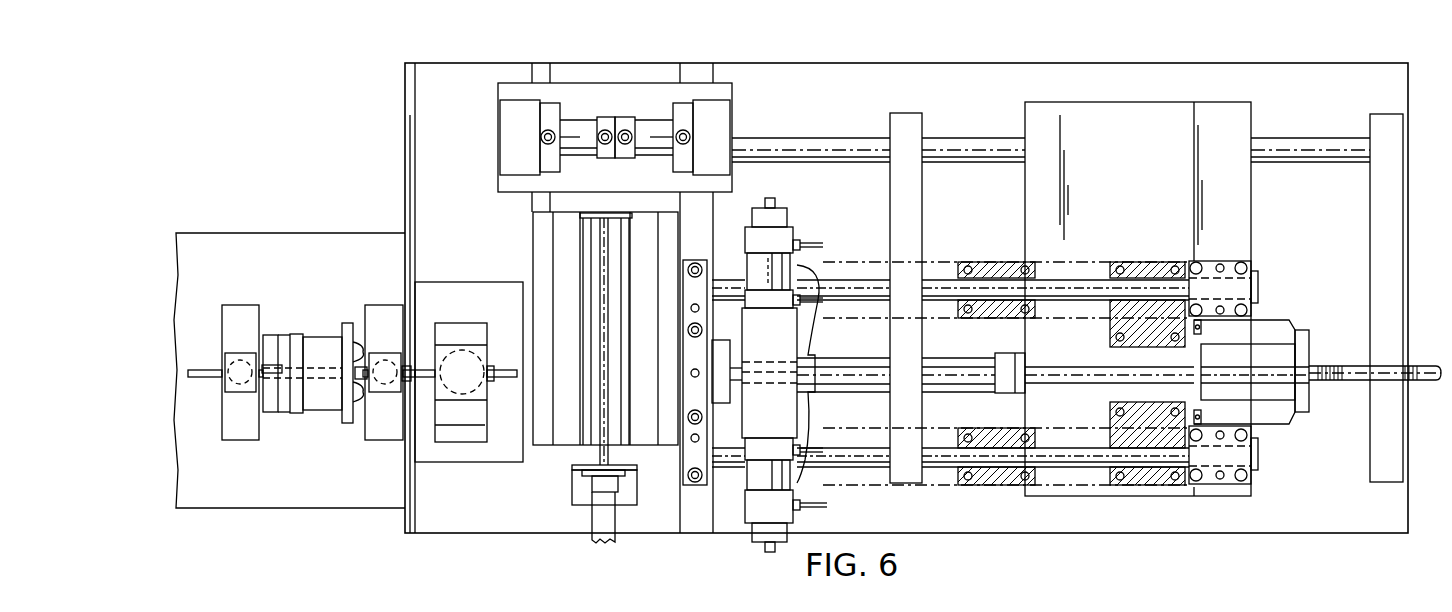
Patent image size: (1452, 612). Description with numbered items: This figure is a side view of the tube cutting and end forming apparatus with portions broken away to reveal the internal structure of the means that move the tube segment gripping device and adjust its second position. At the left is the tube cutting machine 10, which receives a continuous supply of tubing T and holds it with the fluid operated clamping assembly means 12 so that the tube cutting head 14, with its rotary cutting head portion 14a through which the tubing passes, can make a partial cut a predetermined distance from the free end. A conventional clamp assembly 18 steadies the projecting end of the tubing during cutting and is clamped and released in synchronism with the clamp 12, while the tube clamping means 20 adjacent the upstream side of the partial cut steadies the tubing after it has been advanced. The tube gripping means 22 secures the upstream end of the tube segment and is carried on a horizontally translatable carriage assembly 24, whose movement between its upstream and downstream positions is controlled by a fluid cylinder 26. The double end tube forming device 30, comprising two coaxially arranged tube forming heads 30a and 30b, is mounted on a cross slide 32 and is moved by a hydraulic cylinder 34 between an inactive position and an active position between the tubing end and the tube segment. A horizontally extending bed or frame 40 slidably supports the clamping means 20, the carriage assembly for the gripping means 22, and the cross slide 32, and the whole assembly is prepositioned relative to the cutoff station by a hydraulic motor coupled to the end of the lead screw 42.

The tube cutting machine 10 is at (352, 487).
The fluid operated clamping assembly means 12 is at (247, 323).
The tube cutting head 14 is at (322, 352).
The rotary cutting head portion 14a is at (360, 340).
The clamp assembly 18 is at (388, 327).
The tube clamping means 20 is at (472, 328).
The tube gripping means 22 is at (780, 348).
The carriage assembly 24 is at (798, 473).
The fluid cylinder 26 is at (905, 365).
The double end tube forming device 30 is at (622, 109).
The tube forming head 30a is at (512, 132).
The tube forming head 30b is at (717, 123).
The cross slide 32 is at (573, 255).
The hydraulic cylinder 34 is at (600, 520).
The bed or frame 40 is at (660, 517).
The lead screw 42 is at (1419, 380).
The tubing T is at (210, 372).